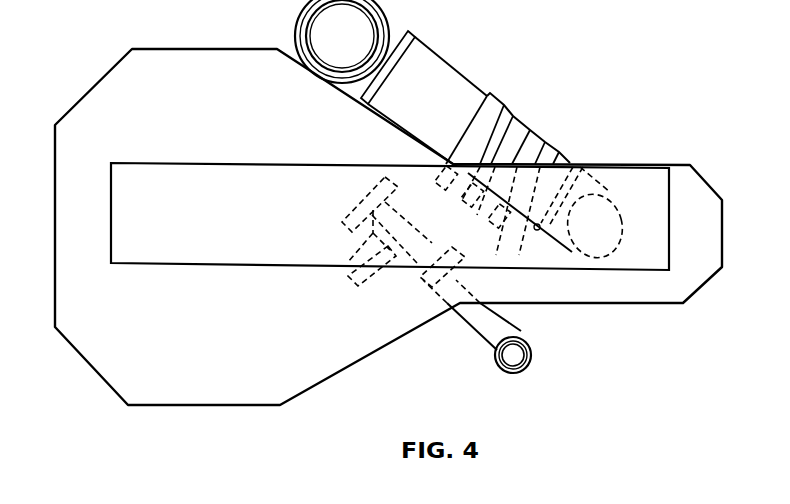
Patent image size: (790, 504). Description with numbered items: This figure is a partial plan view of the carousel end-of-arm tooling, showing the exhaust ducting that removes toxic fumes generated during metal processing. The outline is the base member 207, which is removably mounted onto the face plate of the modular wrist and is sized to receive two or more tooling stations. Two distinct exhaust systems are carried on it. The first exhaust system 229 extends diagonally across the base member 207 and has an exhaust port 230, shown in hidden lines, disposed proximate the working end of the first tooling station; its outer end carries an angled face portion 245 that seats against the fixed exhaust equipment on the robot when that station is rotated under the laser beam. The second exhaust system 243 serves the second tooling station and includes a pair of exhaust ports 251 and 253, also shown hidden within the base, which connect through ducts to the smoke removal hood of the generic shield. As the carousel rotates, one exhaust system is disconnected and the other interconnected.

The base member 207 is at (236, 398).
The first exhaust system 229 is at (455, 68).
The exhaust port 230 is at (604, 244).
The second exhaust system 243 is at (482, 320).
The face portion 245 is at (380, 24).
The exhaust port 251 is at (343, 277).
The exhaust port 253 is at (343, 187).